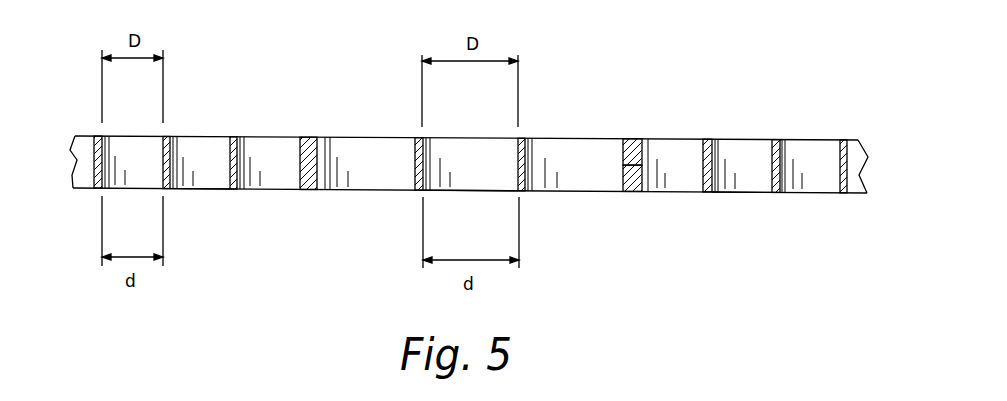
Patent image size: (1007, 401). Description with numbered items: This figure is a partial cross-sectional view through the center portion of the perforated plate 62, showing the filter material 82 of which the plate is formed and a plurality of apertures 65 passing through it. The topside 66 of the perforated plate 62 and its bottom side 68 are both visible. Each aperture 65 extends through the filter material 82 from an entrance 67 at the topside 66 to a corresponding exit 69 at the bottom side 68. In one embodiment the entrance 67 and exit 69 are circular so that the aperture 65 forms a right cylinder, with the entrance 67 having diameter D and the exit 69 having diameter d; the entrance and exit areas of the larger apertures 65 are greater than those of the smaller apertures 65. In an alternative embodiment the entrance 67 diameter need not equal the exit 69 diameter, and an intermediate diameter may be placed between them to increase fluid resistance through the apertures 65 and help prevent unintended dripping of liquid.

The perforated plate 62 is at (323, 255).
The aperture 65 is at (198, 148).
The topside 66 is at (633, 139).
The entrance 67 is at (133, 133).
The bottom side 68 is at (631, 192).
The exit 69 is at (208, 190).
The filter material 82 is at (310, 128).